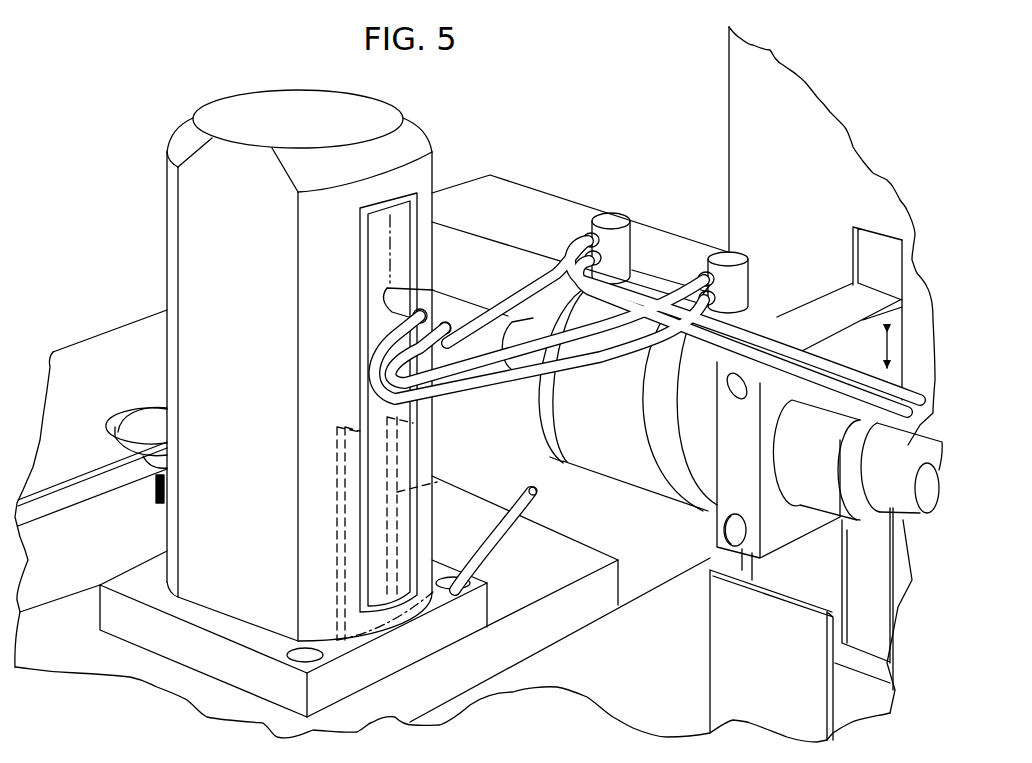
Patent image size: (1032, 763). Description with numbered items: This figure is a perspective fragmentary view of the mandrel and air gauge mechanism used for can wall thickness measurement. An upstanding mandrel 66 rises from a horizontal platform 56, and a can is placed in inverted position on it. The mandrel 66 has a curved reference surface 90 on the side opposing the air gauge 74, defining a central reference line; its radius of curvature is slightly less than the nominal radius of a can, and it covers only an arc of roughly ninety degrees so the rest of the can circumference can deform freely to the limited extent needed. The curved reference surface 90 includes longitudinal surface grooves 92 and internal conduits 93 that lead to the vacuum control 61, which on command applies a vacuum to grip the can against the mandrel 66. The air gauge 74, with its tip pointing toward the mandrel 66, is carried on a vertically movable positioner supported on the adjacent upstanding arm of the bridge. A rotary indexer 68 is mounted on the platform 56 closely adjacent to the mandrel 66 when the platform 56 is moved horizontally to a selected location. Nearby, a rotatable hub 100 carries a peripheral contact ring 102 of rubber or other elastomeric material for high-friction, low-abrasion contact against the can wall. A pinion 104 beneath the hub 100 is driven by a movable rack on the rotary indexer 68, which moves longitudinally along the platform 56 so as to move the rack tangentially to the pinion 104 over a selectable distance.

The horizontal platform 56 is at (135, 675).
The vacuum control 61 is at (544, 465).
The mandrel 66 is at (422, 125).
The rotary indexer 68 is at (110, 356).
The air gauge 74 is at (660, 266).
The curved reference surface 90 is at (392, 218).
The longitudinal surface grooves 92 is at (362, 308).
The internal conduits 93 is at (337, 525).
The rotatable hub 100 is at (147, 427).
The peripheral contact ring 102 is at (147, 455).
The pinion 104 is at (156, 503).